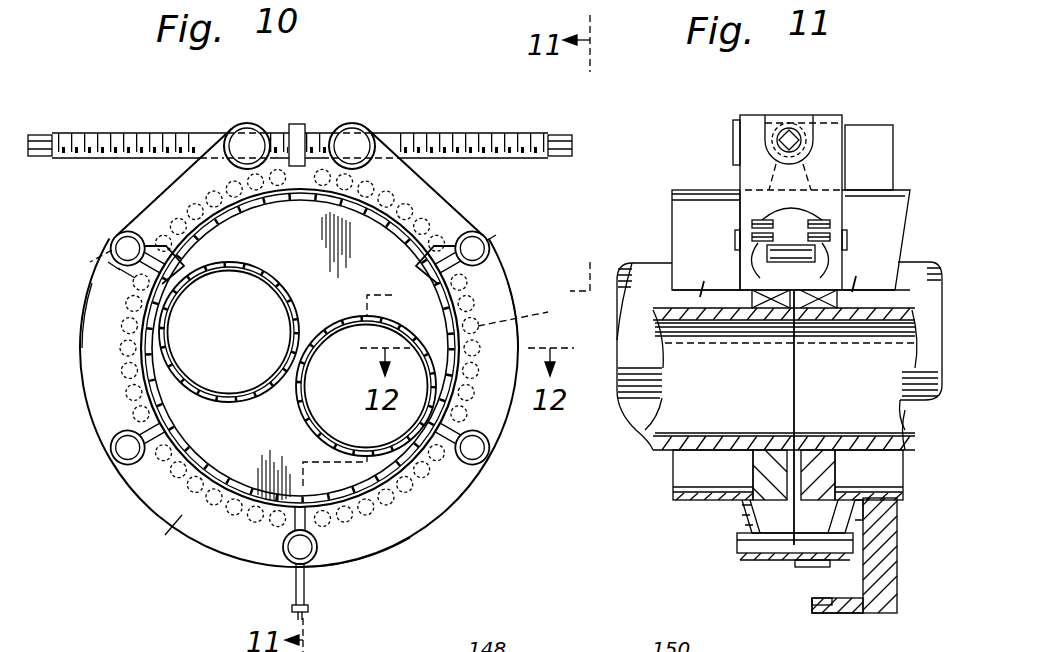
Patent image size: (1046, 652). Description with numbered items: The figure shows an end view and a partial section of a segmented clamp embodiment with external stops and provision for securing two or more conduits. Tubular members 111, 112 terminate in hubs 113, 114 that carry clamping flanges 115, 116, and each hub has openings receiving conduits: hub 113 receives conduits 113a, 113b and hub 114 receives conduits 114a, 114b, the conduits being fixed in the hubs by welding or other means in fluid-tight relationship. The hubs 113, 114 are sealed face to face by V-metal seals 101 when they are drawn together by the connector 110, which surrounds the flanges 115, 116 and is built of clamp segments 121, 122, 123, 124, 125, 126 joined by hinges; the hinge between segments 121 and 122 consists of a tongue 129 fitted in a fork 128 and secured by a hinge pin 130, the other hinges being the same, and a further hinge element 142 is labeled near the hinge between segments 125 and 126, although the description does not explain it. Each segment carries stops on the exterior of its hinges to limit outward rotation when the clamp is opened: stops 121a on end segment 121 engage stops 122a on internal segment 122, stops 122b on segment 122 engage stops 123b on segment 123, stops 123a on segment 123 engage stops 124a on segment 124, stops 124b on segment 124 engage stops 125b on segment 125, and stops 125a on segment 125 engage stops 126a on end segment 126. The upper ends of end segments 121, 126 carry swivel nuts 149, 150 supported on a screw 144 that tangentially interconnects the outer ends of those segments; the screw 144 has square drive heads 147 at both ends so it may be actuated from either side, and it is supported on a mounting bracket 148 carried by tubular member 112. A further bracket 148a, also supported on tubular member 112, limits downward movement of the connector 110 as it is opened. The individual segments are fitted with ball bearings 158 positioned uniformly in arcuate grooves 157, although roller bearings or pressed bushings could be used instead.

In FIG. 11, the V-metal seal 101 is at (795, 445).
In FIG. 10, the connector 110 is at (146, 510).
In FIG. 11, the connector 110 is at (668, 535).
In FIG. 10, the tubular member 111 is at (198, 462).
In FIG. 11, the tubular member 111 is at (681, 488).
In FIG. 11, the tubular member 112 is at (894, 190).
In FIG. 10, the hub 113 is at (300, 245).
In FIG. 11, the hub 113 is at (760, 470).
In FIG. 10, the conduit 113a is at (308, 368).
In FIG. 11, the conduit 113a is at (645, 430).
In FIG. 10, the conduit 113b is at (199, 282).
In FIG. 11, the conduit 113b is at (643, 262).
In FIG. 11, the hub 114 is at (830, 468).
In FIG. 11, the conduit 114a is at (900, 432).
In FIG. 11, the conduit 114b is at (928, 262).
In FIG. 11, the clamping flange 115 is at (780, 521).
In FIG. 11, the clamping flange 116 is at (890, 538).
In FIG. 10, the end clamp segment 121 is at (152, 184).
In FIG. 10, the stop 121a is at (118, 222).
In FIG. 10, the internal clamp segment 122 is at (100, 398).
In FIG. 10, the stop 122a is at (116, 243).
In FIG. 10, the stop 122b is at (112, 466).
In FIG. 10, the internal clamp segment 123 is at (166, 541).
In FIG. 10, the stop 123a is at (293, 570).
In FIG. 10, the stop 123b is at (118, 480).
In FIG. 10, the internal clamp segment 124 is at (438, 526).
In FIG. 10, the stop 124a is at (312, 568).
In FIG. 10, the stop 124b is at (488, 462).
In FIG. 10, the internal clamp segment 125 is at (506, 298).
In FIG. 10, the stop 125a is at (500, 245).
In FIG. 11, the stop 125a is at (783, 262).
In FIG. 10, the stop 125b is at (494, 456).
In FIG. 10, the end clamp segment 126 is at (432, 202).
In FIG. 10, the stop 126a is at (486, 230).
In FIG. 11, the stop 126a is at (830, 217).
In FIG. 10, the fork 128 is at (108, 264).
In FIG. 10, the tongue 129 is at (78, 249).
In FIG. 10, the hinge pin 130 is at (100, 283).
In FIG. 10, the pin 142 is at (476, 262).
In FIG. 10, the screw 144 is at (99, 133).
In FIG. 10, the square drive head 147 is at (40, 134).
In FIG. 11, the square drive head 147 is at (794, 124).
In FIG. 10, the mounting bracket 148 is at (296, 124).
In FIG. 11, the mounting bracket 148 is at (868, 124).
In FIG. 11, the bracket 148a is at (881, 613).
In FIG. 10, the swivel nut 149 is at (246, 122).
In FIG. 10, the swivel nut 150 is at (356, 122).
In FIG. 11, the arcuate groove 157 is at (785, 563).
In FIG. 10, the ball bearing 158 is at (533, 312).